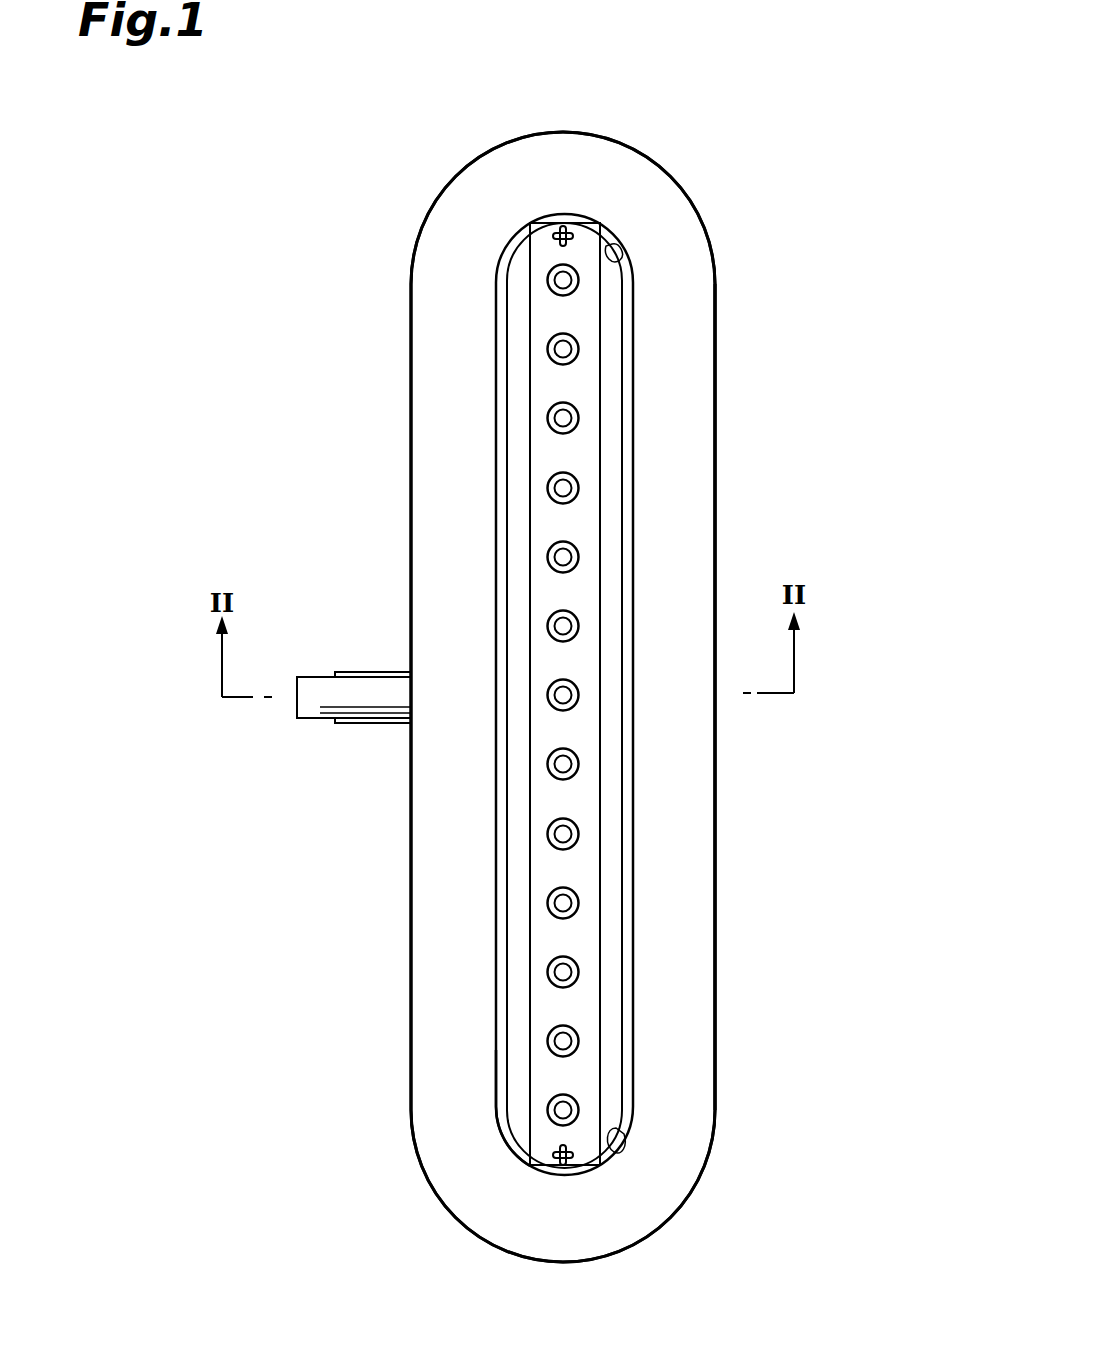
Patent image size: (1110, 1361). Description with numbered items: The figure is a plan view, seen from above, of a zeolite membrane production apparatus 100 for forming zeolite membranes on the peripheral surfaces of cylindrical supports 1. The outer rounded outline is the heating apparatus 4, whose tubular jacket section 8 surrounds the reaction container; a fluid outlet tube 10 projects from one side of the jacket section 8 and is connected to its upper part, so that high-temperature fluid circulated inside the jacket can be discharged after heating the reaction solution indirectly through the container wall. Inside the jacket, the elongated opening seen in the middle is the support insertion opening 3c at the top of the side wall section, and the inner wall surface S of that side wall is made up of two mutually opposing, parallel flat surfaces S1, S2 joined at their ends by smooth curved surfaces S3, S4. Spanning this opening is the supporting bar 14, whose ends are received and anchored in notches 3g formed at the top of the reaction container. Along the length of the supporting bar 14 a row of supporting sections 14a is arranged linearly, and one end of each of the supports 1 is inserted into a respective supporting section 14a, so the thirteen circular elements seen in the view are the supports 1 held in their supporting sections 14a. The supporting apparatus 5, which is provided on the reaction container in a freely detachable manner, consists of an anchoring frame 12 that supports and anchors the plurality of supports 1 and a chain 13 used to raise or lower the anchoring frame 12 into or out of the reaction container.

The zeolite membrane production apparatus 100 is at (757, 85).
The heating apparatus 4 is at (698, 192).
The jacket section 8 is at (715, 302).
The notches 3g is at (540, 216).
The support insertion opening 3c is at (620, 887).
The supporting bar 14 is at (600, 795).
The supports 1 is at (580, 962).
The supporting sections 14a is at (578, 982).
The supporting apparatus 5 is at (439, 729).
The anchoring frame 12 is at (520, 1112).
The chain 13 is at (557, 1156).
The fluid outlet tube 10 is at (362, 672).
The inner wall surface S is at (613, 402).
The flat surface S1 is at (617, 721).
The flat surface S2 is at (520, 841).
The curved surface S3 is at (628, 1136).
The curved surface S4 is at (623, 240).